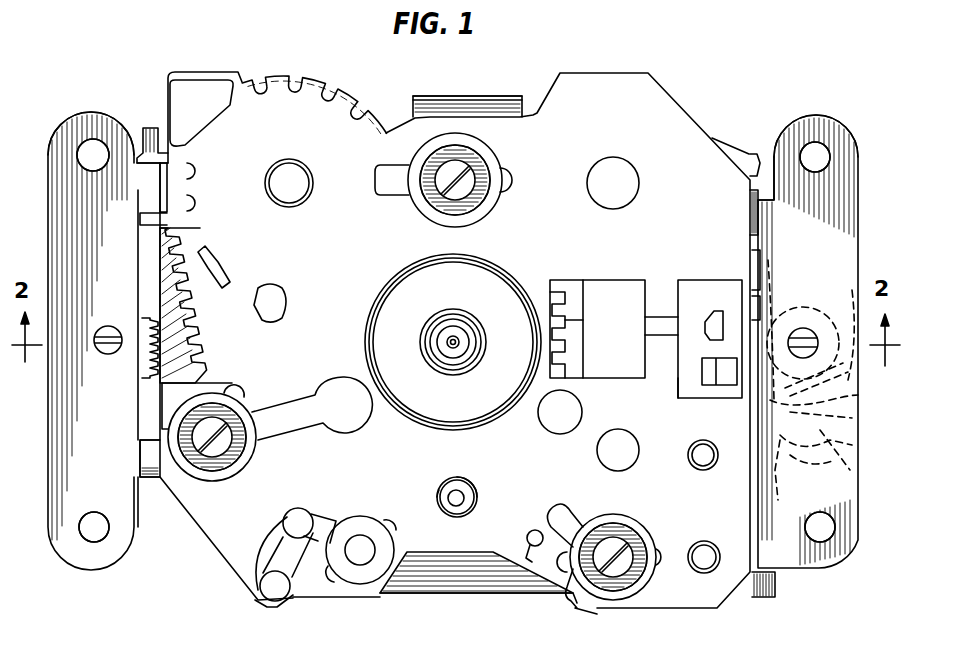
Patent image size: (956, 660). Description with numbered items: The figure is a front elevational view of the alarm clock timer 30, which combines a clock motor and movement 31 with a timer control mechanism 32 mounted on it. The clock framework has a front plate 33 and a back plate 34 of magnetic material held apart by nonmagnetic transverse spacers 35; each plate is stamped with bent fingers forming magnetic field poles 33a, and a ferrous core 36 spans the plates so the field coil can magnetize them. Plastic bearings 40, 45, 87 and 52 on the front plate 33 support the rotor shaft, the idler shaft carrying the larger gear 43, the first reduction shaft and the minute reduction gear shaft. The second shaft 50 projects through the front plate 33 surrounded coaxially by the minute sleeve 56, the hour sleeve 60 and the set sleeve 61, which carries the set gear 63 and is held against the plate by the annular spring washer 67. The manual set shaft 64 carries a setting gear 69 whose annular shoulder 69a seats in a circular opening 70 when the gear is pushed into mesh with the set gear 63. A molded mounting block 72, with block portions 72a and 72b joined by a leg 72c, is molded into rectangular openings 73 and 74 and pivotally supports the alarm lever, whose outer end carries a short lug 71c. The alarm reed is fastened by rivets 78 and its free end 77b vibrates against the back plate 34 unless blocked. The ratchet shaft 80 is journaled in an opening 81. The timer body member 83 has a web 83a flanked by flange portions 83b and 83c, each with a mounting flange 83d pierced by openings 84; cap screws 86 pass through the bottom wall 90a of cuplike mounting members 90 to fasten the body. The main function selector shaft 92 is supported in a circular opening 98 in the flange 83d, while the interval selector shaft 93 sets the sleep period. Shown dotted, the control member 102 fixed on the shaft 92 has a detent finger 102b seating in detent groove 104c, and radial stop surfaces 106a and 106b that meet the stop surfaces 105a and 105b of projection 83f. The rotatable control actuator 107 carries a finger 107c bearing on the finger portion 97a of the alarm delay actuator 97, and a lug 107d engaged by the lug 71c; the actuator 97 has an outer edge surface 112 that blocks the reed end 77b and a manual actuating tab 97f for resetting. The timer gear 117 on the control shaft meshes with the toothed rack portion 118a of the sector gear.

The alarm clock timer 30 is at (704, 42).
The clock motor and movement 31 is at (498, 597).
The timer control mechanism 32 is at (802, 580).
The front plate 33 is at (336, 595).
The magnetic field poles 33a is at (272, 92).
The back plate 34 is at (440, 580).
The transverse spacers 35 is at (197, 95).
The core of ferrous material 36 is at (618, 168).
The plastic bearing 40 is at (302, 192).
The larger gear 43 is at (172, 276).
The plastic bearing 45 is at (283, 300).
The second shaft 50 is at (453, 336).
The plastic bearing member 52 is at (560, 430).
The minute sleeve 56 is at (478, 343).
The hour sleeve 60 is at (455, 360).
The set sleeve 61 is at (424, 344).
The set gear 63 is at (578, 314).
The manual set shaft 64 is at (456, 490).
The annular spring washer 67 is at (405, 290).
The setting gear 69 is at (478, 503).
The annular shoulder 69a is at (468, 490).
The circular opening 70 is at (440, 490).
The lug or projection 71c is at (755, 300).
The mounting block 72 is at (617, 278).
The block portion 72a is at (600, 290).
The block portion 72b is at (690, 282).
The leg 72c is at (650, 338).
The rectangular opening 73 is at (572, 283).
The rectangular opening 74 is at (690, 398).
The free end of alarm reed 77b is at (756, 155).
The rivets 78 is at (702, 470).
The ratchet shaft 80 is at (541, 559).
The opening 81 is at (526, 538).
The body member 83 is at (108, 572).
The web or back portion 83a is at (148, 124).
The flange portion 83b is at (147, 480).
The flange portion 83c is at (748, 222).
The mounting flange 83d is at (68, 128).
The projection 83f is at (754, 262).
The opening 84 is at (93, 140).
The cap screw 86 is at (463, 192).
The plastic bearing 87 is at (338, 420).
The cuplike mounting member 90 is at (420, 205).
The bottom wall 90a is at (470, 168).
The main function selector shaft 92 is at (822, 318).
The interval selector shaft 93 is at (100, 350).
The alarm delay actuator 97 is at (443, 92).
The finger portion 97a is at (832, 470).
The manual actuating tab 97f is at (466, 95).
The circular opening 98 is at (803, 328).
The control member 102 is at (858, 398).
The detent finger 102b is at (855, 447).
The detent groove 104c is at (855, 422).
The stop surface 105a is at (855, 300).
The stop surface 105b is at (786, 296).
The radial stop surface 106a is at (850, 372).
The radial stop surface 106b is at (738, 396).
The switch and alarm delay control actuator 107 is at (795, 470).
The lug or finger 107c is at (797, 480).
The lug or projection 107d is at (770, 345).
The outer edge surface 112 is at (748, 158).
The timer gear 117 is at (148, 377).
The toothed rack portion 118a is at (160, 305).